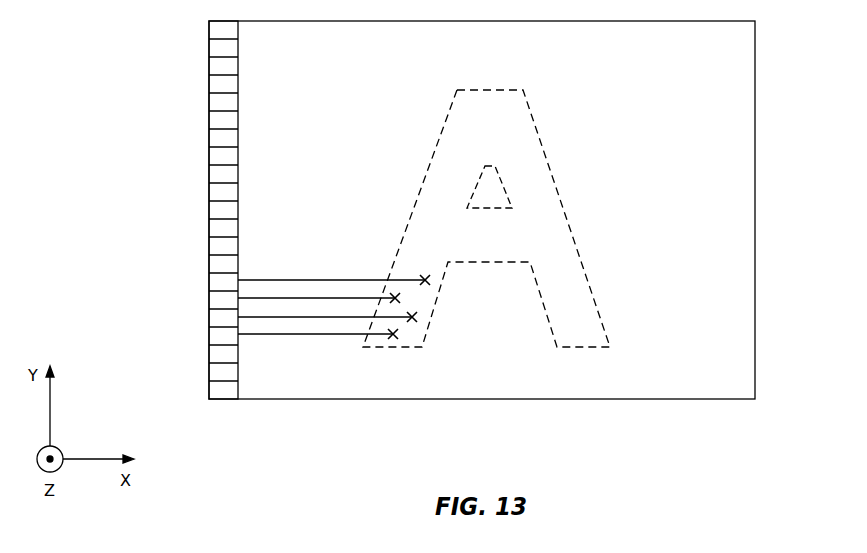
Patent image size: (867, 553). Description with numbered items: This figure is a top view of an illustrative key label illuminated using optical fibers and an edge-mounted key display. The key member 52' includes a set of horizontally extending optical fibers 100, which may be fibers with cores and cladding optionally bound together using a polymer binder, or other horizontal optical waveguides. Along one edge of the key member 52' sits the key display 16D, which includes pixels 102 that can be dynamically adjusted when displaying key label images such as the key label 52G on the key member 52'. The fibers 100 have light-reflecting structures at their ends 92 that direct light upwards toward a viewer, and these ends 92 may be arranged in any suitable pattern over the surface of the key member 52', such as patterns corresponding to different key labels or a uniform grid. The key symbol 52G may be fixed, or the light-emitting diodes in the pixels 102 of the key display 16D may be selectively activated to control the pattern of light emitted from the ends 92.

The key member 52' is at (514, 210).
The key display 16D is at (209, 370).
The pixels 102 is at (216, 135).
The key label 52G is at (537, 123).
The optical fibers 100 is at (297, 334).
The ends 92 is at (391, 338).